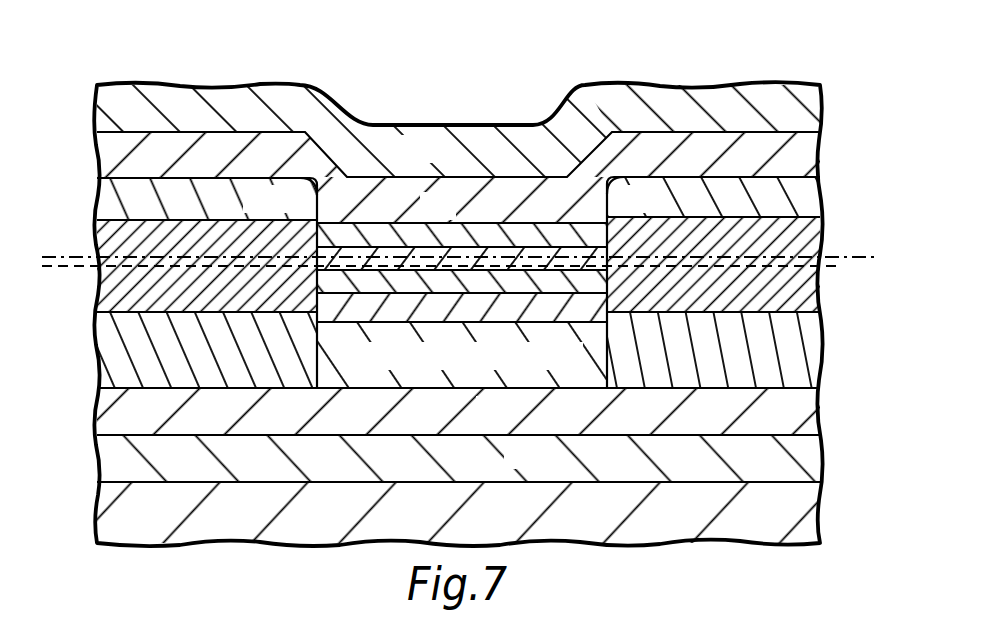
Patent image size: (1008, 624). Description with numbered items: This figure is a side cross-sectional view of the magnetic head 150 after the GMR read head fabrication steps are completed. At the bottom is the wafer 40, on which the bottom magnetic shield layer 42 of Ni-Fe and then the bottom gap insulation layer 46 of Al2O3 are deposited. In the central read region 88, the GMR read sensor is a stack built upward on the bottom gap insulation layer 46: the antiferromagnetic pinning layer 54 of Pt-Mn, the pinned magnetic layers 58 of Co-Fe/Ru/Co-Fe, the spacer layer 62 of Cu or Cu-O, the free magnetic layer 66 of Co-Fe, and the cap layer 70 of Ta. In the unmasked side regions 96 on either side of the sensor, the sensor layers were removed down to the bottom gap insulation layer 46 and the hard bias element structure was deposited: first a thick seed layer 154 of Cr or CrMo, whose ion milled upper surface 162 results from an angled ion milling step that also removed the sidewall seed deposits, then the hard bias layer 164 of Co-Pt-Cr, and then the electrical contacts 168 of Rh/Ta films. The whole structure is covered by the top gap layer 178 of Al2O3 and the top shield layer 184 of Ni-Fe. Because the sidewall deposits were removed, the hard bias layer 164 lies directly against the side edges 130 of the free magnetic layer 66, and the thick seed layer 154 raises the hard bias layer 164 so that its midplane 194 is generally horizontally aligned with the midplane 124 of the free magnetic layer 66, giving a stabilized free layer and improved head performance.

The wafer 40 is at (489, 520).
The bottom magnetic shield layer 42 is at (543, 470).
The bottom gap insulation layer 46 is at (480, 424).
The antiferromagnetic pinning layer 54 is at (538, 363).
The pinned magnetic layers 58 is at (500, 307).
The spacer layer 62 is at (452, 292).
The free magnetic layer 66 is at (387, 268).
The cap layer 70 is at (427, 237).
The read region 88 is at (447, 112).
The side regions 96 is at (200, 62).
The midplane of the free magnetic layer 124 is at (67, 255).
The side edges of the free magnetic layer 130 is at (312, 225).
The magnetic head 150 is at (387, 92).
The seed layer 154 is at (113, 358).
The ion milled upper surface 162 is at (100, 307).
The hard bias layer 164 is at (98, 228).
The electrical contacts 168 is at (112, 197).
The top gap layer 178 is at (400, 193).
The top shield layer 184 is at (488, 143).
The midplane of the hard bias layer 194 is at (60, 262).